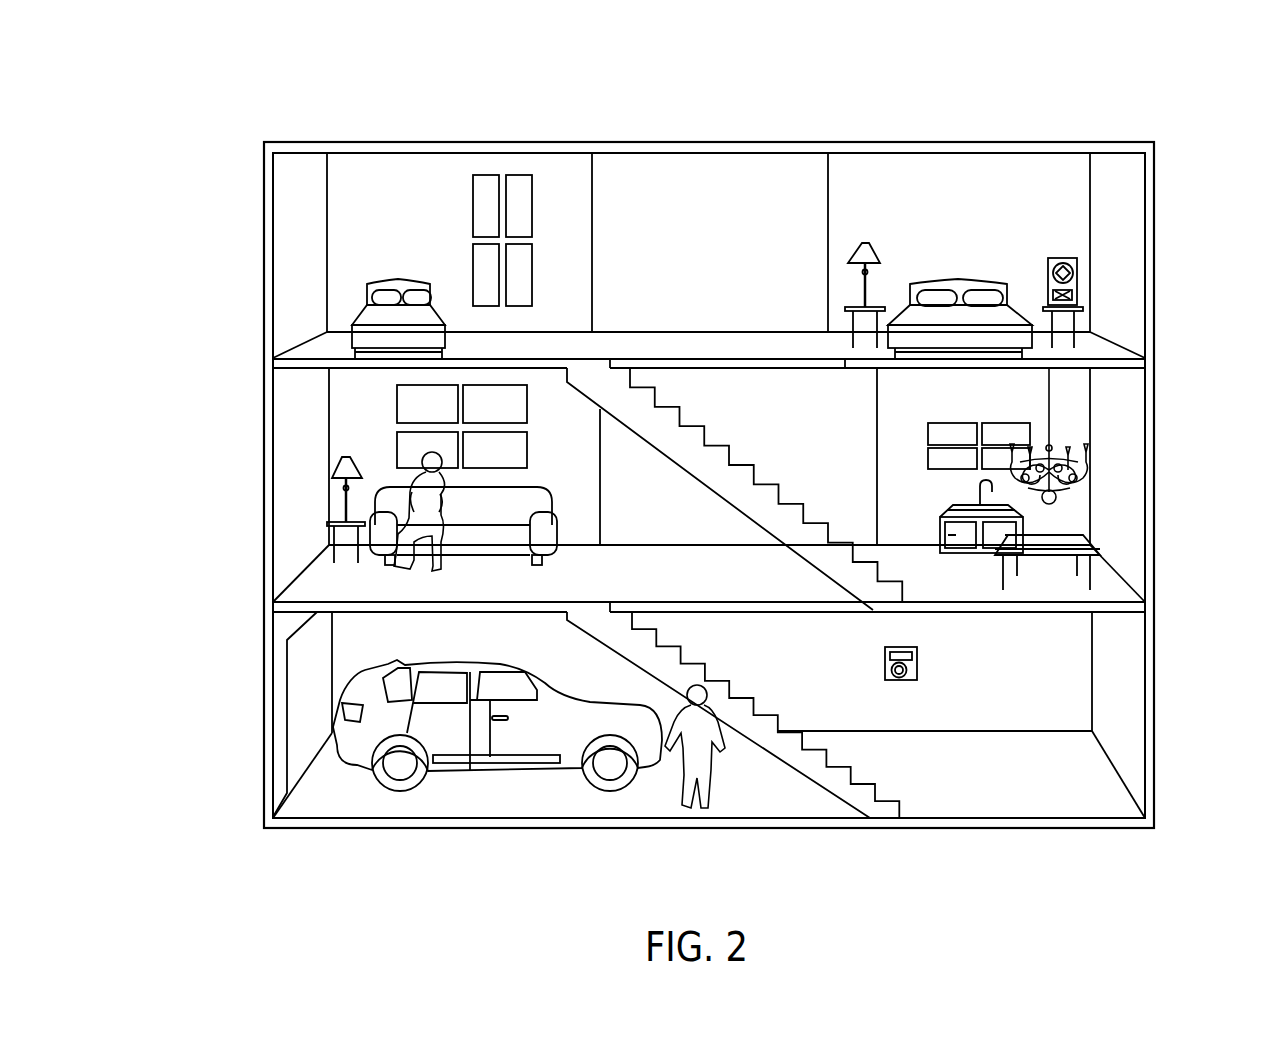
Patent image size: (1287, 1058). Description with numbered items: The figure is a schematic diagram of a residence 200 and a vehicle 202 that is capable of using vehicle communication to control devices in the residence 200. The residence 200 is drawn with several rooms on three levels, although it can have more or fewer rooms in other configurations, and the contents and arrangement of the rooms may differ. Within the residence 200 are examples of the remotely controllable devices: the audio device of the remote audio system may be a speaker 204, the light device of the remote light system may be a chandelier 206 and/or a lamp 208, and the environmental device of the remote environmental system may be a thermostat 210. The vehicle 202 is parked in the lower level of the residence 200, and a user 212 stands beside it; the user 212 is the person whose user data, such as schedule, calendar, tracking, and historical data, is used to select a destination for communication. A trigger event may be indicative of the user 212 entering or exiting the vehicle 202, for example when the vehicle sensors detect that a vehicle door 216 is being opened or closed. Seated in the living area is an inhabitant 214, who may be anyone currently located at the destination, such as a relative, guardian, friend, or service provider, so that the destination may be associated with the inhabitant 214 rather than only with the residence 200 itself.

The residence 200 is at (190, 65).
The vehicle 202 is at (489, 779).
The speaker 204 is at (1077, 283).
The chandelier 206 is at (1090, 477).
The lamp 208 is at (340, 478).
The thermostat 210 is at (917, 661).
The user 212 is at (700, 760).
The inhabitant 214 is at (450, 480).
The vehicle door 216 is at (525, 735).